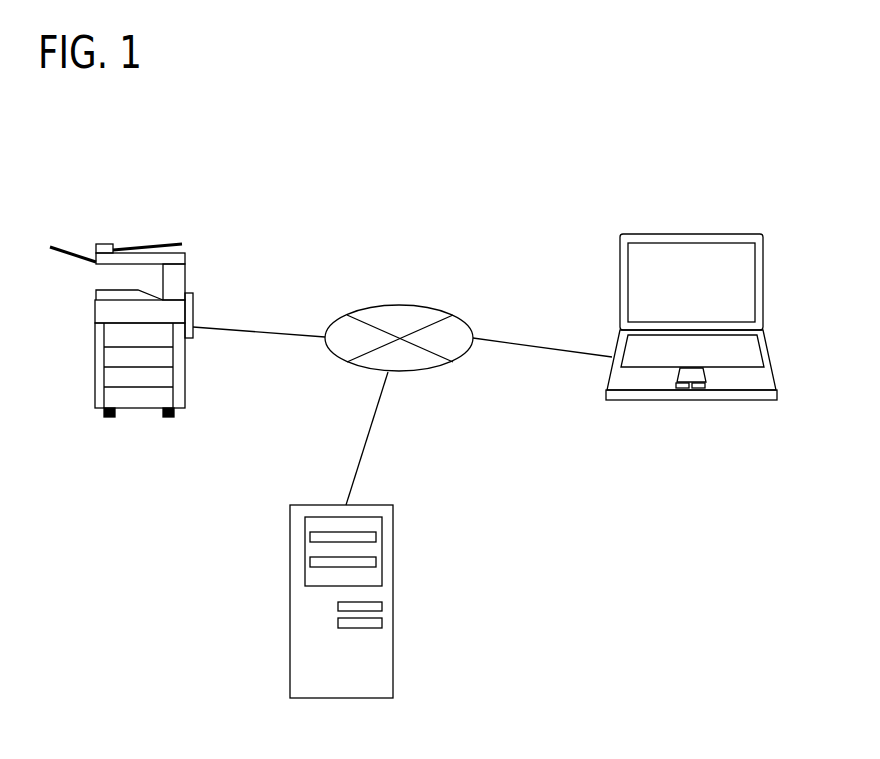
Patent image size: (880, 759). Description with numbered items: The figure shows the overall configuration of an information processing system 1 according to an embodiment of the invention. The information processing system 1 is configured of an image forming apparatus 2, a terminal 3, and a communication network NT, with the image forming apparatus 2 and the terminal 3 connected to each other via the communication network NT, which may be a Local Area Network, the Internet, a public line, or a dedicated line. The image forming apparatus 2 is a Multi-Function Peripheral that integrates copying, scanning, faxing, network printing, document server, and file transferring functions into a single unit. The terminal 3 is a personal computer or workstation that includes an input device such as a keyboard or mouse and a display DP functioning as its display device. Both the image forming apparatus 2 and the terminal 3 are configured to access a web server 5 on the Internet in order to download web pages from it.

The information processing system 1 is at (415, 158).
The image forming apparatus 2 is at (95, 365).
The terminal 3 is at (699, 317).
The display DP is at (742, 272).
The communication network NT is at (435, 372).
The web server 5 is at (393, 657).